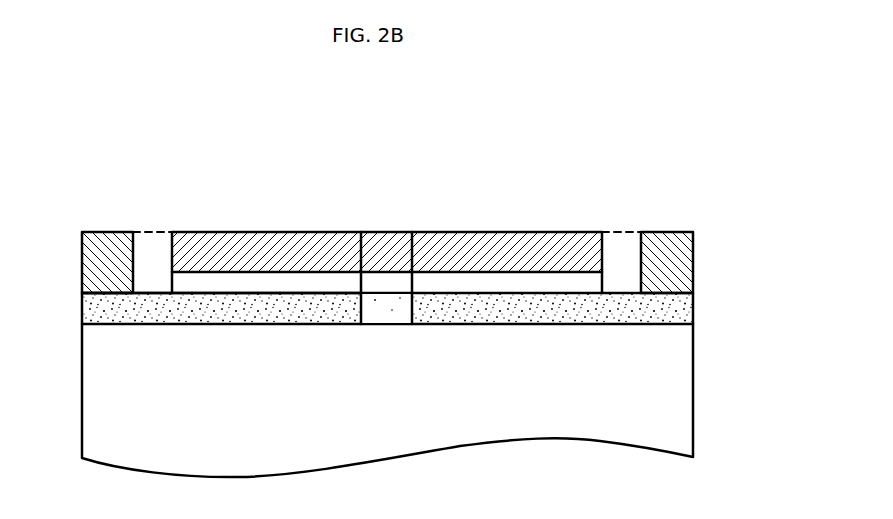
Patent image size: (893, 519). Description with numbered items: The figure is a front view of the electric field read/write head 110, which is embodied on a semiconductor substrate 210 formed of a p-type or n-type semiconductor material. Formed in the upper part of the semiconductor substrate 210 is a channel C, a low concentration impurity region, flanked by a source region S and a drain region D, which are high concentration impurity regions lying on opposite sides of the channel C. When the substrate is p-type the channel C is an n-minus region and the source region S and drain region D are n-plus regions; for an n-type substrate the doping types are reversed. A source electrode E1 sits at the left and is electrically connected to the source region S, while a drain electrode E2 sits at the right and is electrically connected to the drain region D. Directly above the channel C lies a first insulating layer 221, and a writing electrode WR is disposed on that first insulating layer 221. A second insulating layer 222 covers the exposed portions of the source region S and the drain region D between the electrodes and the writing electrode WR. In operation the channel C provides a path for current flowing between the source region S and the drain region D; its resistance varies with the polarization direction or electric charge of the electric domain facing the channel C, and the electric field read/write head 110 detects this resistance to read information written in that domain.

The electric field read/write head 110 is at (680, 123).
The semiconductor substrate 210 is at (683, 404).
The first insulating layer 221 is at (398, 286).
The second insulating layer 222 is at (153, 245).
The source electrode E1 is at (103, 232).
The drain electrode E2 is at (668, 232).
The writing electrode WR is at (386, 232).
The source region S is at (137, 306).
The channel C is at (388, 313).
The drain region D is at (656, 316).